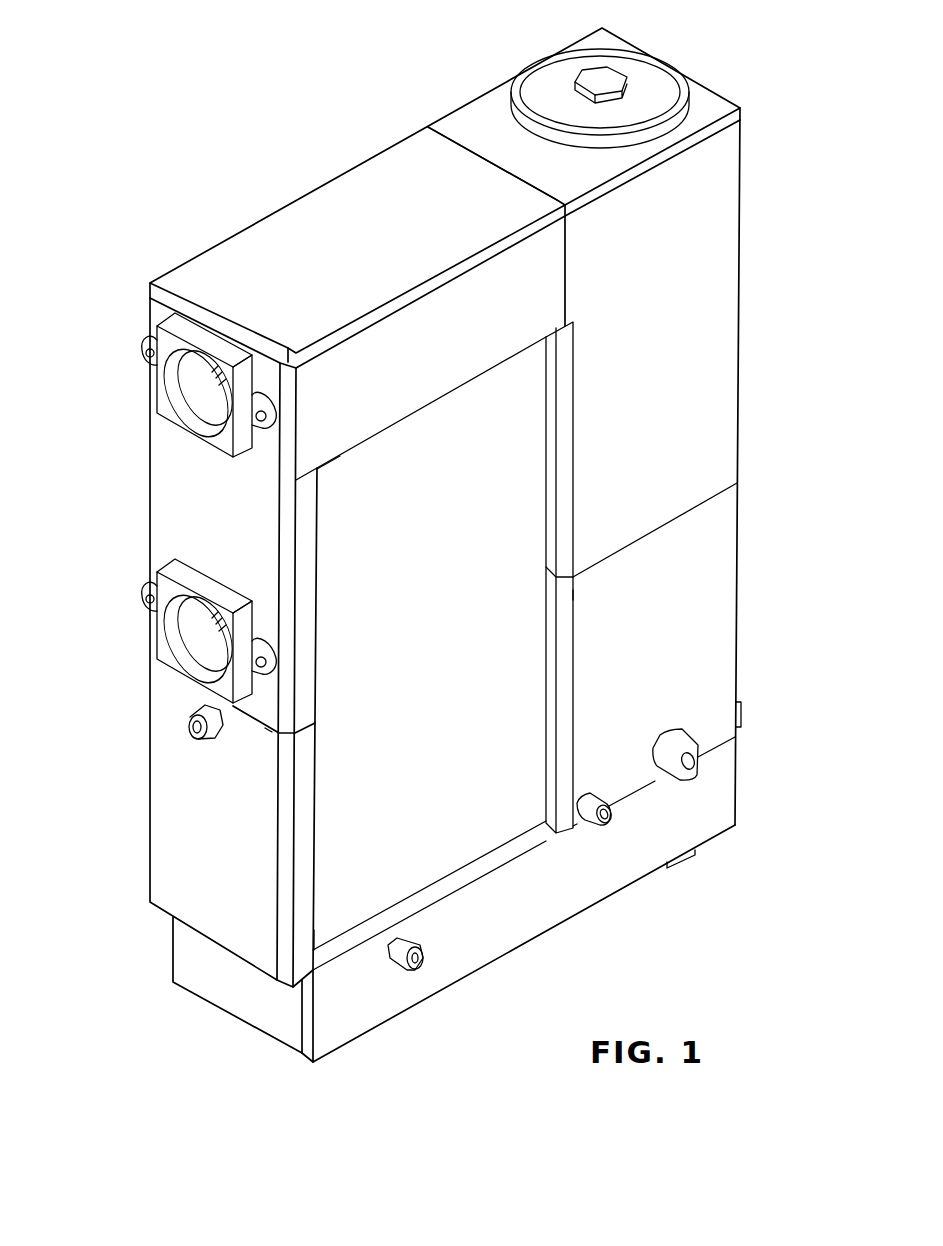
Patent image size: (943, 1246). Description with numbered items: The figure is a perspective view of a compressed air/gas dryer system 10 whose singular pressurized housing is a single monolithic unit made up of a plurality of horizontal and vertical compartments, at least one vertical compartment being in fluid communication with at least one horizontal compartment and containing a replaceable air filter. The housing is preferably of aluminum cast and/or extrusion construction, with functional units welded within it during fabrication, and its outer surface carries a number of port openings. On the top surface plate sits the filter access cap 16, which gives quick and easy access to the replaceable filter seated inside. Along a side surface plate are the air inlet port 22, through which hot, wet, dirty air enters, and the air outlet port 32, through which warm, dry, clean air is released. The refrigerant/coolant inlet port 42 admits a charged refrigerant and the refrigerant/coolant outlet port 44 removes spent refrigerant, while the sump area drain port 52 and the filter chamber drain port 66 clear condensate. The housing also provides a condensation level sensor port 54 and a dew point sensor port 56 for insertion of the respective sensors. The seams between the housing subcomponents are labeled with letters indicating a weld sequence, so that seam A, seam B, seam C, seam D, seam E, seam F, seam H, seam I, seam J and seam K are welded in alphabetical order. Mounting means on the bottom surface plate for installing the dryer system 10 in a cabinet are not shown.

The compressed air/gas dryer system 10 is at (218, 83).
The filter access cap 16 is at (668, 58).
The air inlet port 22 is at (190, 402).
The air outlet port 32 is at (180, 690).
The refrigerant/coolant inlet port 42 is at (603, 794).
The refrigerant/coolant outlet port 44 is at (208, 742).
The sump area drain port 52 is at (677, 866).
The condensation level sensor port 54 is at (680, 730).
The dew point sensor port 56 is at (423, 942).
The filter chamber drain port 66 is at (742, 714).
The weld seam A is at (318, 825).
The weld seam B is at (545, 695).
The weld seam C is at (317, 604).
The weld seam D is at (546, 473).
The weld seam E is at (427, 407).
The weld seam F is at (500, 170).
The weld seam H is at (430, 885).
The weld seam I is at (637, 794).
The weld seam J is at (265, 728).
The weld seam K is at (678, 512).